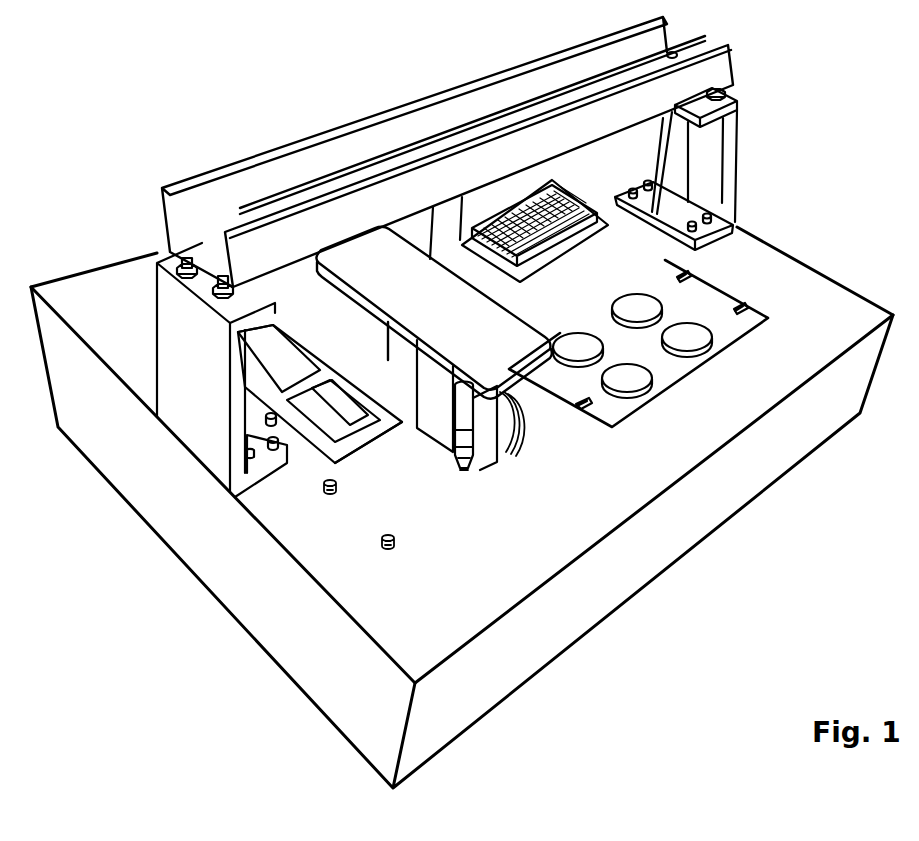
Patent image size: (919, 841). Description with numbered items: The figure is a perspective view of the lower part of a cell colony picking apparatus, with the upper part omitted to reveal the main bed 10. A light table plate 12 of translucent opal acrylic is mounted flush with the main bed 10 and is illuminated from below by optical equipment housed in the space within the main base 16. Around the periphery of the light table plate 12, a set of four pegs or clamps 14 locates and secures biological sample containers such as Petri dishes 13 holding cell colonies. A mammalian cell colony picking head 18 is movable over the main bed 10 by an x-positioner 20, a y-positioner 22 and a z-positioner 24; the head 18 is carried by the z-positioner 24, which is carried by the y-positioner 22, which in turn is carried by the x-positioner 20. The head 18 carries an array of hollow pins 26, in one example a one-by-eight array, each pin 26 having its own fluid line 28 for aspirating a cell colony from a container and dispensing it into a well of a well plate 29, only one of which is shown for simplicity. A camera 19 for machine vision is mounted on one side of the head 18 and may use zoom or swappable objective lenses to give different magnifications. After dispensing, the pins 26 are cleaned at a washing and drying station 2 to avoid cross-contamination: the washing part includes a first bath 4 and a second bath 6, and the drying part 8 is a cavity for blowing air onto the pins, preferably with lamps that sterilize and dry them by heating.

The washing and drying station 2 is at (348, 458).
The first bath 4 is at (365, 440).
The second bath 6 is at (377, 423).
The drying part 8 is at (283, 333).
The main bed 10 is at (850, 310).
The light table plate 12 is at (707, 300).
The Petri dishes 13 is at (712, 342).
The pegs or clamps 14 is at (614, 427).
The main base 16 is at (270, 610).
The cell colony picking head 18 is at (497, 468).
The camera 19 is at (450, 430).
The x-positioner 20 is at (200, 174).
The y-positioner 22 is at (437, 240).
The z-positioner 24 is at (393, 355).
The hollow pins 26 is at (480, 474).
The fluid line 28 is at (503, 442).
The well plate 29 is at (527, 207).